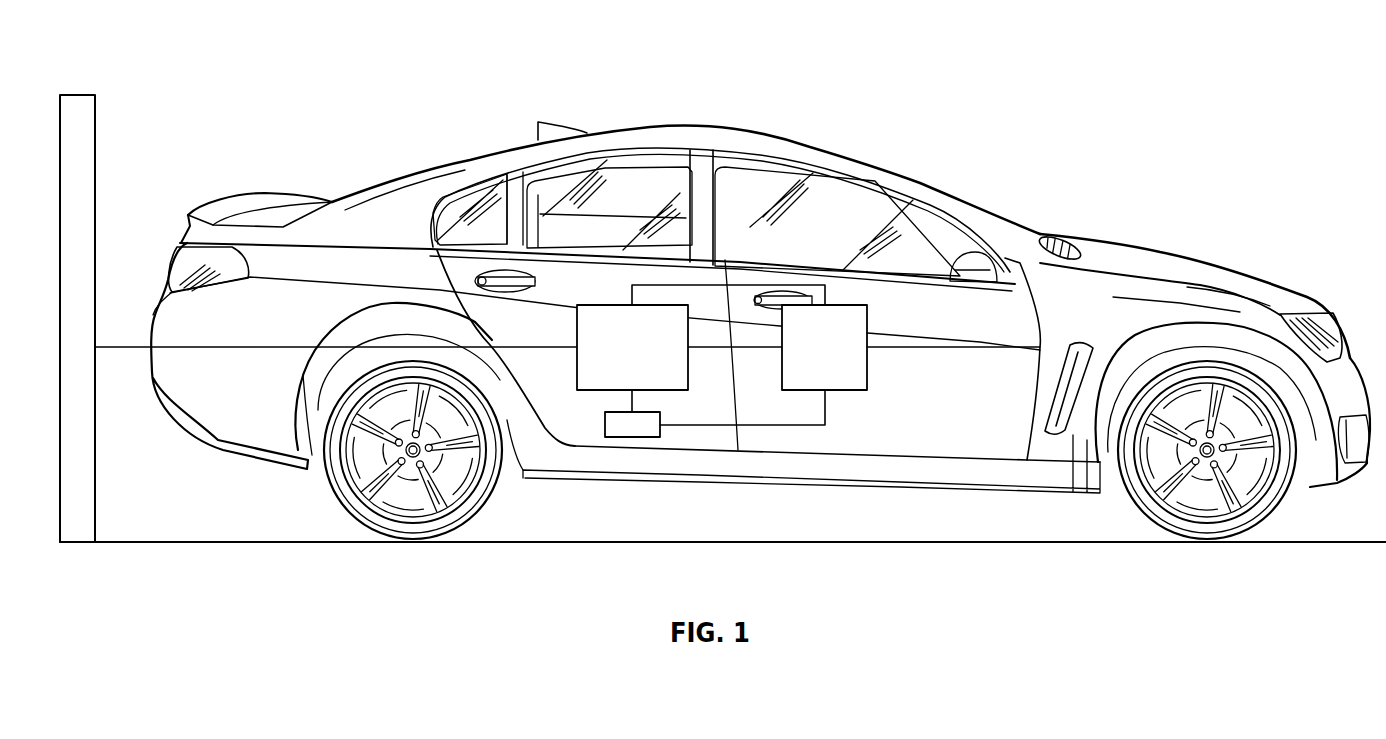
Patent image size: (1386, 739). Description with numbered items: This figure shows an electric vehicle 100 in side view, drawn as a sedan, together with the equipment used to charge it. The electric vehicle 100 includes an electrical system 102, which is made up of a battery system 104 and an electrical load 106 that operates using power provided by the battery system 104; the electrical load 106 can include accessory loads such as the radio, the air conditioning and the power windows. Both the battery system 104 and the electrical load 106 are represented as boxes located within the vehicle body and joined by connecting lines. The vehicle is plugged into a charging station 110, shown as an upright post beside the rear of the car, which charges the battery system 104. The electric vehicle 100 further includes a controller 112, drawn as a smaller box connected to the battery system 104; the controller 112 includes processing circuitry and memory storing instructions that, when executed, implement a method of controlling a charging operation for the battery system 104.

The electric vehicle 100 is at (1118, 52).
The electrical system 102 is at (882, 326).
The battery system 104 is at (619, 304).
The electrical load 106 is at (868, 370).
The charging station 110 is at (80, 95).
The controller 112 is at (628, 438).